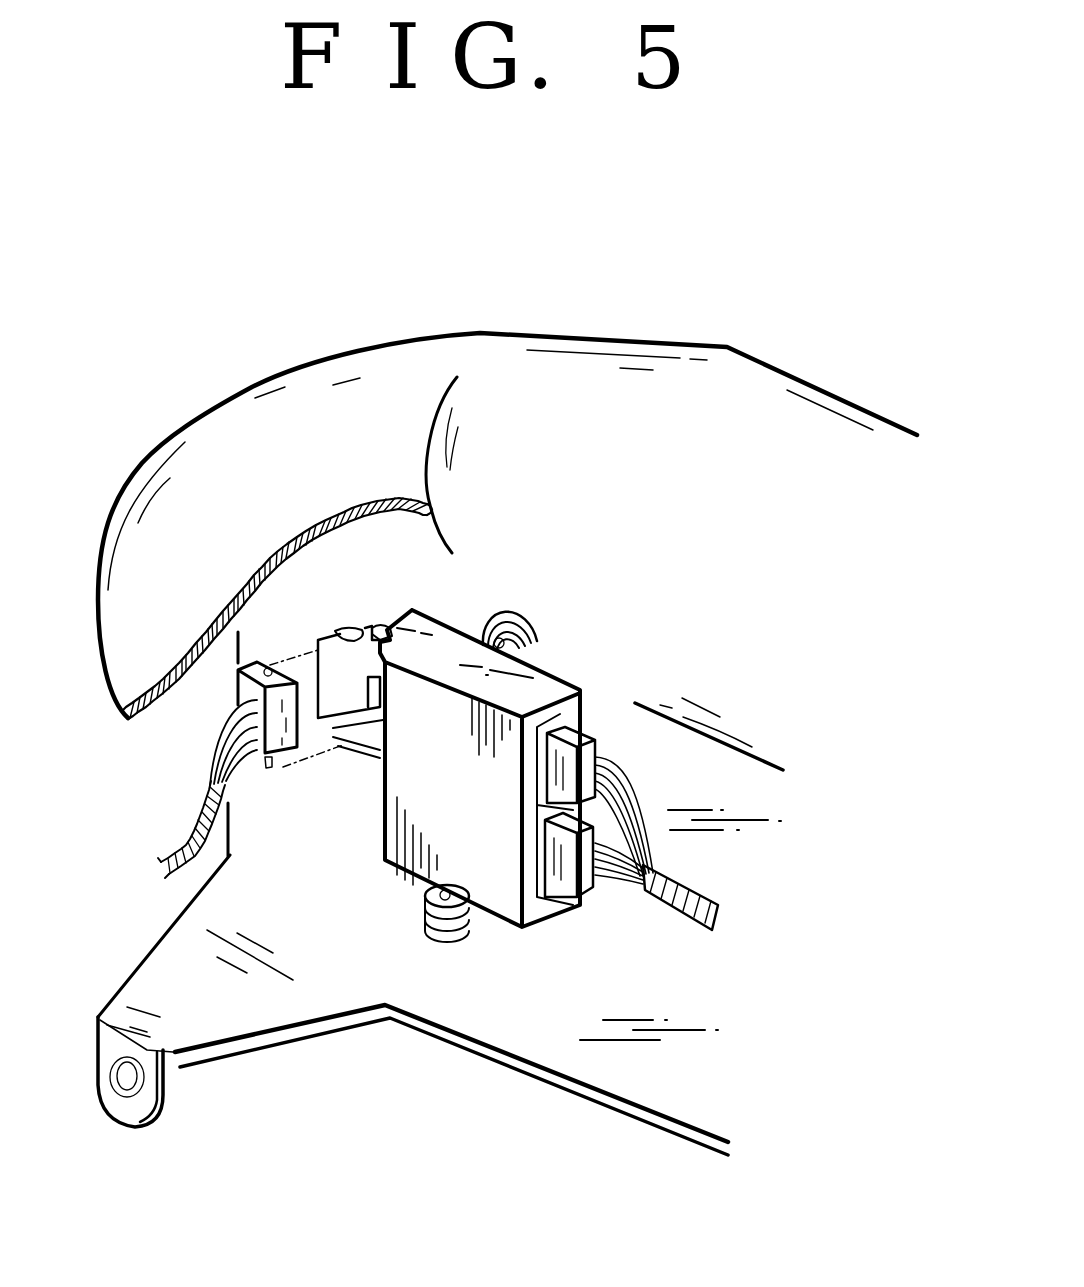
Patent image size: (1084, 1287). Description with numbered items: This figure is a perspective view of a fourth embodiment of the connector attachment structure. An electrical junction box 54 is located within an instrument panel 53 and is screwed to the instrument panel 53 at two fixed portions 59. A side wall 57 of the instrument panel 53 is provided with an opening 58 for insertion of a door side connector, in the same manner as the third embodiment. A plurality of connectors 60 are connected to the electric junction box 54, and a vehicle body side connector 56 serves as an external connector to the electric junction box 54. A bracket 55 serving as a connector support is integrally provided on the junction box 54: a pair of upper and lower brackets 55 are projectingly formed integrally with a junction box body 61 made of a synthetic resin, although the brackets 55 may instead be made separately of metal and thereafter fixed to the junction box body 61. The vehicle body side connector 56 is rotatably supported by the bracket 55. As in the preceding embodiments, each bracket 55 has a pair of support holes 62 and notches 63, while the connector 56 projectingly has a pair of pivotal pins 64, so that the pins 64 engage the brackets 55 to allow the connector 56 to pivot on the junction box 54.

The instrument panel 53 is at (808, 382).
The electrical junction box 54 is at (400, 877).
The bracket 55 is at (447, 620).
The vehicle body side connector 56 is at (283, 747).
The side wall 57 is at (337, 557).
The opening 58 is at (337, 695).
The fixed portions 59 is at (533, 613).
The connectors 60 is at (563, 887).
The junction box body 61 is at (547, 680).
The support holes 62 is at (373, 637).
The notches 63 is at (357, 637).
The pivotal pins 64 is at (262, 767).